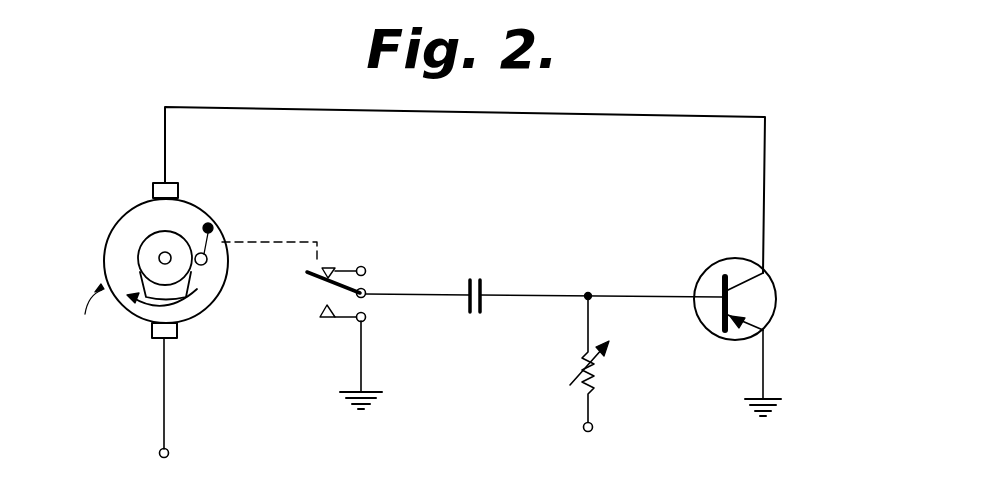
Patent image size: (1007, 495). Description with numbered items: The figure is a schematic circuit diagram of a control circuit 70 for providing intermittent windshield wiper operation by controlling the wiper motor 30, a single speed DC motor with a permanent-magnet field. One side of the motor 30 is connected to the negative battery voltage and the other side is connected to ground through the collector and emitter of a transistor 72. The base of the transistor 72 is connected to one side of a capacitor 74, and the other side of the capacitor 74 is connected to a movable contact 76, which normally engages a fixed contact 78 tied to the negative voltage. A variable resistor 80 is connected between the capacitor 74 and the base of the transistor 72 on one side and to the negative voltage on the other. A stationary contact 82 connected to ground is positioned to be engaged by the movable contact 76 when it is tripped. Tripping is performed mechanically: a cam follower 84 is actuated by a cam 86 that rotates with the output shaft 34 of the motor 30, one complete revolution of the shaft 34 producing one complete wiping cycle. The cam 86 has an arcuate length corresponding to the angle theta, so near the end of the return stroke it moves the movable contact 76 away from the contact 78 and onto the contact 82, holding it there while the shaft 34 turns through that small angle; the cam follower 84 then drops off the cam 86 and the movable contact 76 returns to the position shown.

The wiper motor 30 is at (117, 268).
The motor output shaft 34 is at (164, 257).
The control circuit 70 is at (631, 112).
The transistor 72 is at (727, 261).
The capacitor 74 is at (484, 287).
The movable contact 76 is at (313, 281).
The fixed contact 78 is at (334, 264).
The variable resistor 80 is at (594, 378).
The stationary contact 82 is at (328, 320).
The cam follower 84 is at (212, 252).
The cam 86 is at (203, 296).